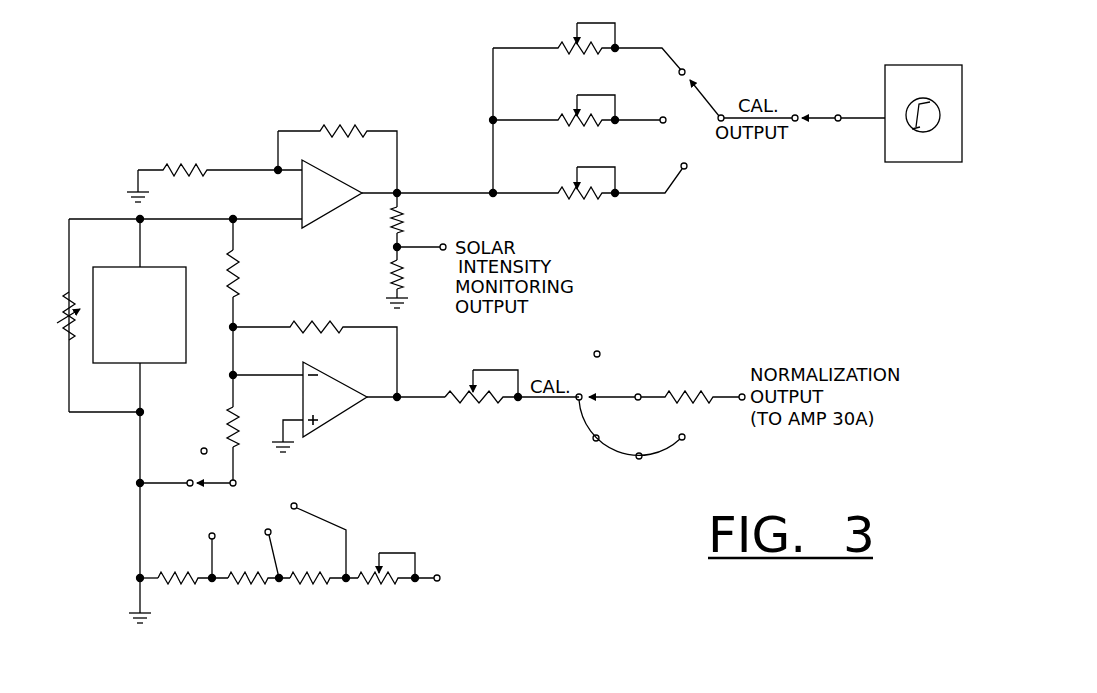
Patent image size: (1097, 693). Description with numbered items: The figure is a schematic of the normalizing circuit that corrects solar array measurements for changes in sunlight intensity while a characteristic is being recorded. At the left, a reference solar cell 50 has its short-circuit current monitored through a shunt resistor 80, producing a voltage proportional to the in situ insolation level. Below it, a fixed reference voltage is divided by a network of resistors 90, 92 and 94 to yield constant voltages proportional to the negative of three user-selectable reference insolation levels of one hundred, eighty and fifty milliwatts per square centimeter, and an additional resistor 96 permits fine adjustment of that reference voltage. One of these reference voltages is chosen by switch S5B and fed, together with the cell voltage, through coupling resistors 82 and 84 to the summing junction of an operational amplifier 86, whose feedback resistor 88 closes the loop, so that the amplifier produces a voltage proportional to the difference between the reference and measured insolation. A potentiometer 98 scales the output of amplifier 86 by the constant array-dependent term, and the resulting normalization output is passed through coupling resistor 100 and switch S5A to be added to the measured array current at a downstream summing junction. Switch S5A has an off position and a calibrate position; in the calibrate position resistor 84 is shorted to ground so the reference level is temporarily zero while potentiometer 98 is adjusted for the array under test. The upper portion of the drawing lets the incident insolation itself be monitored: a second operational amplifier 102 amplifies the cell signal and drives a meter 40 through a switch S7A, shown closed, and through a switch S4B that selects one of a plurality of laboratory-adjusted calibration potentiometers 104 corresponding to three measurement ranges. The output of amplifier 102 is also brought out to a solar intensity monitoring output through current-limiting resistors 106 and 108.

The meter 40 is at (911, 75).
The reference solar cell 50 is at (171, 276).
The shunt resistor 80 is at (84, 306).
The coupling resistor 82 is at (240, 273).
The coupling resistor 84 is at (238, 420).
The operational amplifier 86 is at (346, 404).
The feedback resistor 88 is at (314, 325).
The resistor 90 is at (185, 585).
The resistor 92 is at (250, 585).
The resistor 94 is at (320, 585).
The resistor 96 is at (392, 585).
The potentiometer 98 is at (478, 408).
The coupling resistor 100 is at (698, 388).
The operational amplifier 102 is at (331, 203).
The calibration potentiometers 104 is at (608, 199).
The current-limiting resistor 106 is at (404, 214).
The current-limiting resistor 108 is at (393, 270).
The switch S4B is at (704, 95).
The switch S5A is at (618, 394).
The switch S5B is at (214, 484).
The switch S7A is at (824, 124).